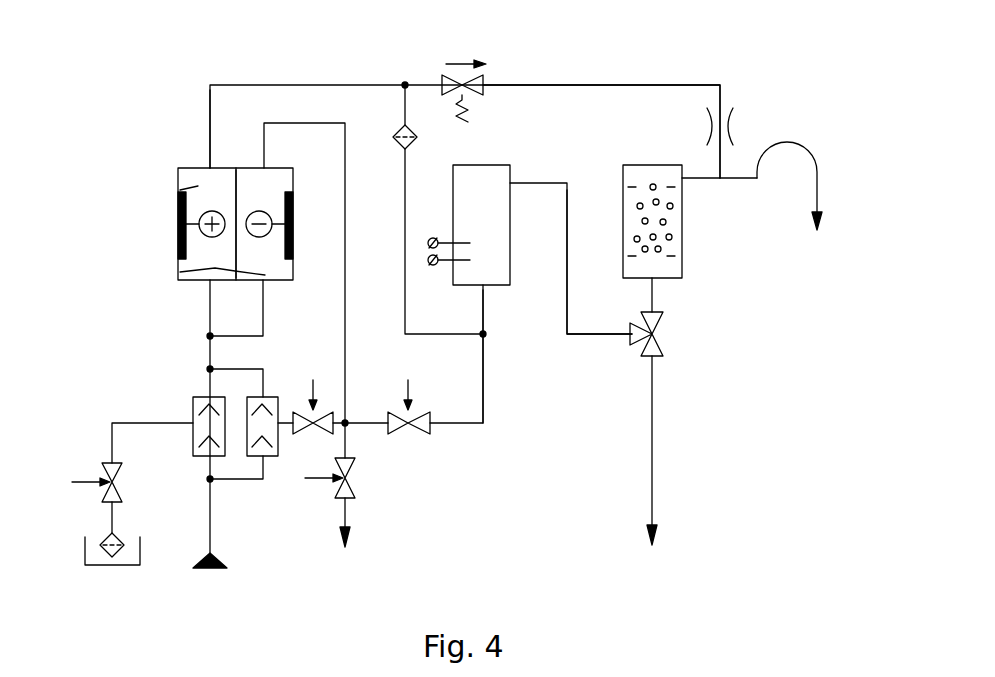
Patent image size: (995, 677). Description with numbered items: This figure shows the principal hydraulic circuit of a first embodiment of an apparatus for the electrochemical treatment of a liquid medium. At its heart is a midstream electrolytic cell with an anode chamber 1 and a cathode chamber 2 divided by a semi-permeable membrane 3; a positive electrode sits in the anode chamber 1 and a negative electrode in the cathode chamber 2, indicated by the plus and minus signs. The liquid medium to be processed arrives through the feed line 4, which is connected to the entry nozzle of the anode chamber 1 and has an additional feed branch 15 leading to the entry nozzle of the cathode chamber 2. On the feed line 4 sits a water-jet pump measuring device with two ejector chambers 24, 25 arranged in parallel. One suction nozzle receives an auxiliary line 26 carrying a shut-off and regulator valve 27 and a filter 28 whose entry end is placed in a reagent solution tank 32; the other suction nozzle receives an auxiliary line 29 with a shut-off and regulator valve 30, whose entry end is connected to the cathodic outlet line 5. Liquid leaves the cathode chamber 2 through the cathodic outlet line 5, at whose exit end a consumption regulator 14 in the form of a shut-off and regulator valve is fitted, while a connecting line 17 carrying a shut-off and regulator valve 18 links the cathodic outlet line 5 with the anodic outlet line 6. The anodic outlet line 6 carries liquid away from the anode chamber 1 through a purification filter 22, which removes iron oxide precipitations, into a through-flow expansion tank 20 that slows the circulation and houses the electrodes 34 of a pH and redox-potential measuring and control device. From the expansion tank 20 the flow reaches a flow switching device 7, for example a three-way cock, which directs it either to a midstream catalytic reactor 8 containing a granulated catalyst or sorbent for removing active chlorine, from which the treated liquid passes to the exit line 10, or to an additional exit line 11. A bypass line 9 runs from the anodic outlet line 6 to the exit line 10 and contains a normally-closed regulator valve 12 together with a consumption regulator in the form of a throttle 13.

The anode chamber 1 is at (178, 177).
The cathode chamber 2 is at (178, 263).
The membrane 3 is at (220, 183).
The feed line 4 is at (210, 527).
The cathodic outlet line 5 is at (345, 190).
The anodic outlet line 6 is at (210, 152).
The flow switching device 7 is at (668, 338).
The catalytic reactor 8 is at (680, 245).
The bypass line 9 is at (662, 87).
The exit line 10 is at (793, 145).
The additional exit line 11 is at (655, 420).
The regulator valve 12 is at (483, 92).
The throttle 13 is at (728, 128).
The consumption regulator 14 is at (345, 500).
The additional feed branch 15 is at (263, 315).
The connecting line 17 is at (345, 418).
The shut-off and regulator valve 18 is at (430, 432).
The expansion tank 20 is at (483, 207).
The purification filter 22 is at (417, 137).
The ejector chamber 24 is at (193, 410).
The ejector chamber 25 is at (270, 397).
The auxiliary line 26 is at (110, 450).
The shut-off and regulator valve 27 is at (122, 482).
The filter 28 is at (108, 543).
The auxiliary line 29 is at (292, 432).
The shut-off and regulator valve 30 is at (343, 434).
The reagent solution tank 32 is at (117, 566).
The electrodes 34 is at (432, 265).